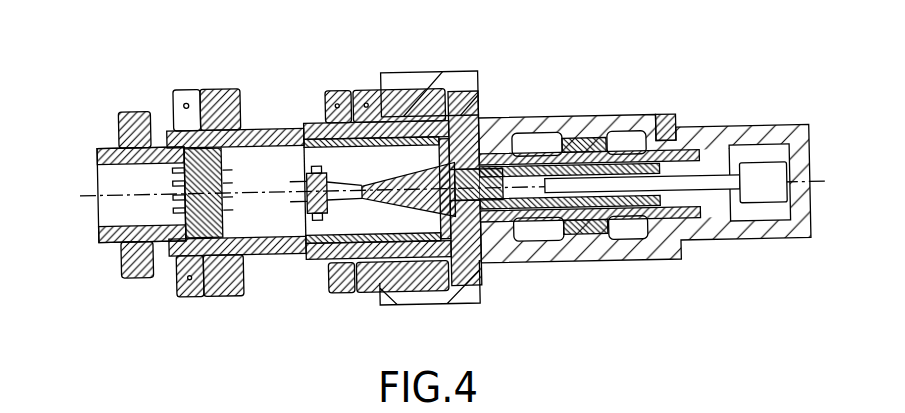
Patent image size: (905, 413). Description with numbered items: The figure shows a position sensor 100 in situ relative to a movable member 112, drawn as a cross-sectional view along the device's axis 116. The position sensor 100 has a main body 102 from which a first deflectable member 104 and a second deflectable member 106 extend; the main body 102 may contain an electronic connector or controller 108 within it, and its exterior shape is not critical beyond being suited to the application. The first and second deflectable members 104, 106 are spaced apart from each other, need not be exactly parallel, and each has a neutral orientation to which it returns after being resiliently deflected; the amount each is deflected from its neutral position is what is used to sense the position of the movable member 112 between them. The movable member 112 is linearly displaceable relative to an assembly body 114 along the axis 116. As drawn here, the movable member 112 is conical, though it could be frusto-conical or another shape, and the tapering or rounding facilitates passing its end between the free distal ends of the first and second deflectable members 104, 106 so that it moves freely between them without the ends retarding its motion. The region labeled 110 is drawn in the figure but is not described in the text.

The position sensor 100 is at (127, 102).
The main body 102 is at (137, 277).
The first deflectable member 104 is at (377, 170).
The second deflectable member 106 is at (356, 196).
The electronic connector or controller 108 is at (178, 204).
The valve spool 110 is at (447, 183).
The movable member 112 is at (530, 176).
The assembly body 114 is at (664, 115).
The axis 116 is at (700, 180).